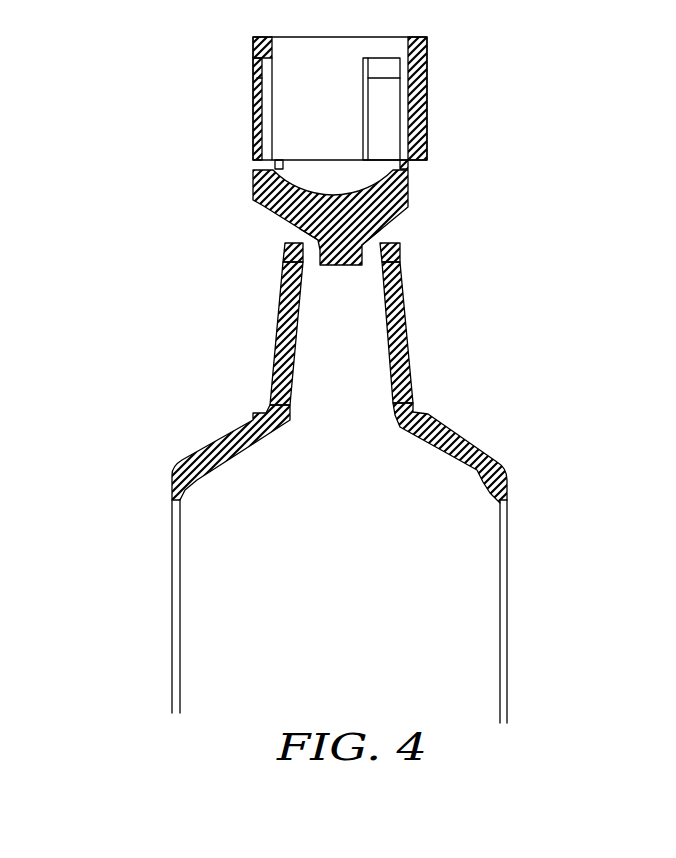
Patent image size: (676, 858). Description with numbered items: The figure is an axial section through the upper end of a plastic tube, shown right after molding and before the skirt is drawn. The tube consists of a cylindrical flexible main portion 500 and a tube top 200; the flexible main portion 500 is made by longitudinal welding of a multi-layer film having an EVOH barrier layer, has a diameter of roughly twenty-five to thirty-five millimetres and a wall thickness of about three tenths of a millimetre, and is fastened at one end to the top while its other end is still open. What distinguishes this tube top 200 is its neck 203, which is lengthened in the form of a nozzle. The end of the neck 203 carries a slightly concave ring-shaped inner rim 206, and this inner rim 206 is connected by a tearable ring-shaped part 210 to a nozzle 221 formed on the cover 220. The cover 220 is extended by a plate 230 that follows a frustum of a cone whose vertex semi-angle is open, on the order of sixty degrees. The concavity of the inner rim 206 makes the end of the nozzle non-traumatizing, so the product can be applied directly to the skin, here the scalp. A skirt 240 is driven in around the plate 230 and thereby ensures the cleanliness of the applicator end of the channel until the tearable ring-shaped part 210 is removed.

The tube top 200 is at (321, 366).
The neck 203 is at (410, 348).
The inner rim 206 is at (399, 252).
The tearable ring-shaped part 210 is at (283, 280).
The cover 220 is at (316, 236).
The nozzle 221 is at (369, 241).
The plate 230 is at (335, 217).
The skirt 240 is at (428, 110).
The flexible main portion 500 is at (502, 568).